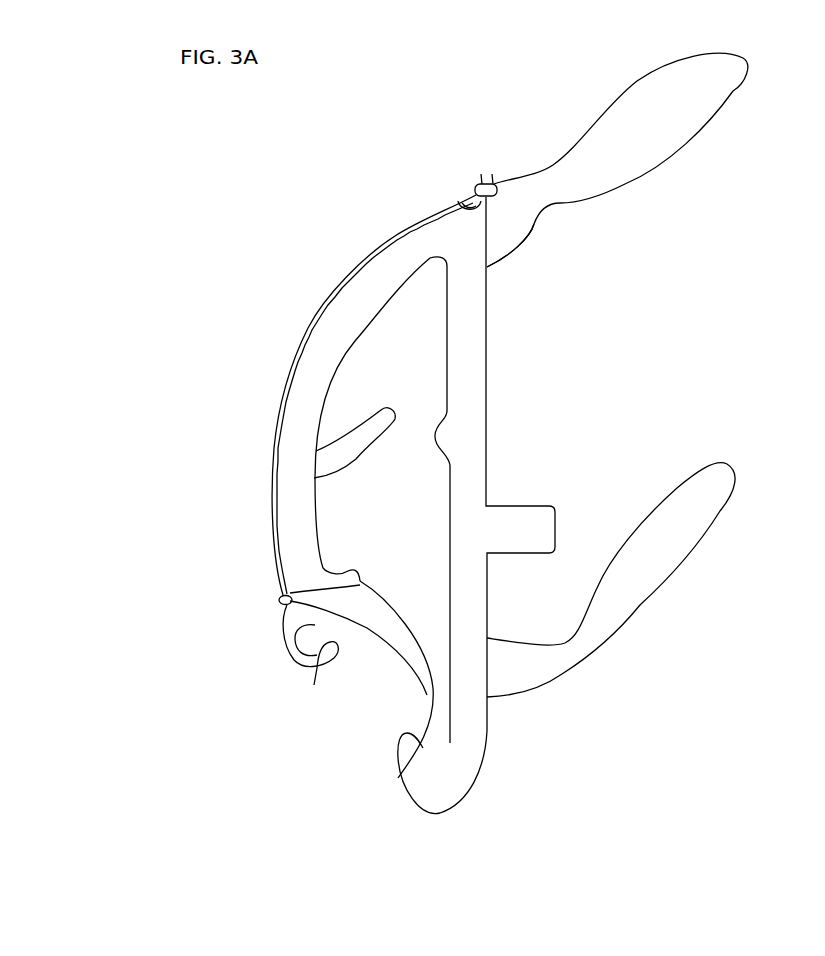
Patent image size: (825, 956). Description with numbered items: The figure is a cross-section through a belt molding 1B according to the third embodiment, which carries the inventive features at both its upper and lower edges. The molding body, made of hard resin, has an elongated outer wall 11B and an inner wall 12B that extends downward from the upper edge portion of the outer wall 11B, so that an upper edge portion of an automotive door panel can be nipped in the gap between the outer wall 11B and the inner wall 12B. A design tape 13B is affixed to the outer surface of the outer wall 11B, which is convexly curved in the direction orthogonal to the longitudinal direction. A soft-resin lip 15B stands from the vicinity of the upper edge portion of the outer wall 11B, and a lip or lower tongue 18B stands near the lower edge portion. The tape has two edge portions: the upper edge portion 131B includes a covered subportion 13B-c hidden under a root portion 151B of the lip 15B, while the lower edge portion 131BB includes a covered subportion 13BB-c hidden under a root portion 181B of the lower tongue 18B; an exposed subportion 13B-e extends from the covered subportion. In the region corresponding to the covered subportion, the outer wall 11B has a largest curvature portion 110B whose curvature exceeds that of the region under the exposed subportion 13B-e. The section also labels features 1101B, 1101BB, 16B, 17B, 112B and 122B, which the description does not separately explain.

The belt molding 1B is at (358, 252).
The design tape 13B is at (303, 325).
The largest curvature portion 110B is at (293, 428).
The covered subportion 13B-c is at (482, 186).
The root portion 151B is at (476, 187).
The upper edge portion 131B is at (493, 186).
The upper hinge portion 1101B is at (490, 205).
The lip 15B is at (730, 83).
The outer wall 11B is at (303, 390).
The exposed subportion 13B-e is at (274, 487).
The inner wall 12B is at (473, 390).
The nose pad arm 17B is at (378, 434).
The lower temple 16B is at (708, 511).
The bar lower portion 122B is at (423, 750).
The body lower end 112B is at (398, 780).
The root portion 181B is at (279, 601).
The lower edge portion 131BB is at (281, 608).
The covered subportion 13BB-c is at (290, 637).
The lip (lower tongue) 18B is at (300, 660).
The lower hinge 1101BB is at (428, 707).